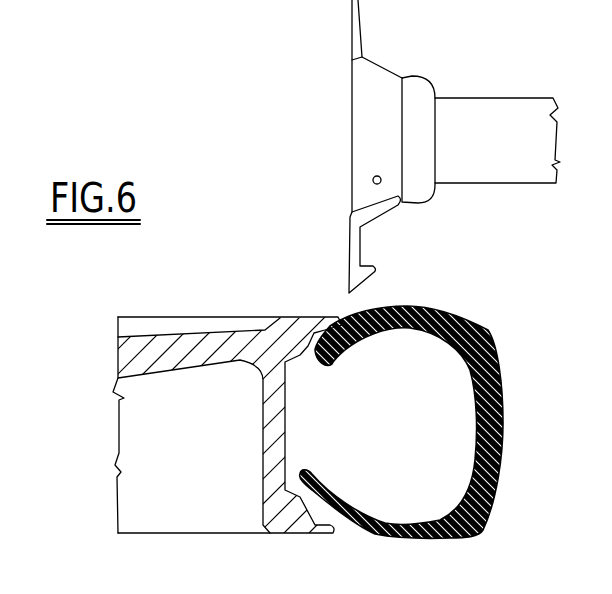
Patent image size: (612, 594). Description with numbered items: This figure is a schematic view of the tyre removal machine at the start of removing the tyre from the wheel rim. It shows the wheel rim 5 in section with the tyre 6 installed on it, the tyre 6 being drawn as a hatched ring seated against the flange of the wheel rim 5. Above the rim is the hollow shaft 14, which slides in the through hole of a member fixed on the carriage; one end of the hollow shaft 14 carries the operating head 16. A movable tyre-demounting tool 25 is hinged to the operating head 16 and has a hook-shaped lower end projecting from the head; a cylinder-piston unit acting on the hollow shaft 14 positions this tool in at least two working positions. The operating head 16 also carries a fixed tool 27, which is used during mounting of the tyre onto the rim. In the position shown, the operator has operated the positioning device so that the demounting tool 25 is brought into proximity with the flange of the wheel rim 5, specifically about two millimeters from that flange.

The wheel rim 5 is at (198, 317).
The tyre 6 is at (500, 358).
The hollow shaft 14 is at (493, 107).
The operating head 16 is at (352, 147).
The tyre-demounting tool 25 is at (357, 273).
The fixed tool 27 is at (350, 32).